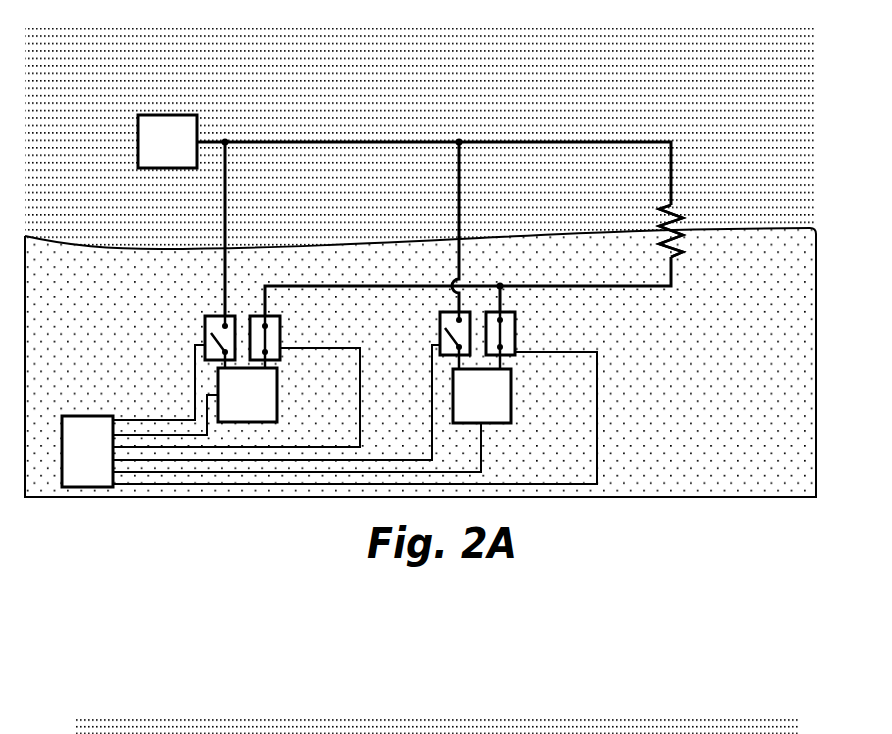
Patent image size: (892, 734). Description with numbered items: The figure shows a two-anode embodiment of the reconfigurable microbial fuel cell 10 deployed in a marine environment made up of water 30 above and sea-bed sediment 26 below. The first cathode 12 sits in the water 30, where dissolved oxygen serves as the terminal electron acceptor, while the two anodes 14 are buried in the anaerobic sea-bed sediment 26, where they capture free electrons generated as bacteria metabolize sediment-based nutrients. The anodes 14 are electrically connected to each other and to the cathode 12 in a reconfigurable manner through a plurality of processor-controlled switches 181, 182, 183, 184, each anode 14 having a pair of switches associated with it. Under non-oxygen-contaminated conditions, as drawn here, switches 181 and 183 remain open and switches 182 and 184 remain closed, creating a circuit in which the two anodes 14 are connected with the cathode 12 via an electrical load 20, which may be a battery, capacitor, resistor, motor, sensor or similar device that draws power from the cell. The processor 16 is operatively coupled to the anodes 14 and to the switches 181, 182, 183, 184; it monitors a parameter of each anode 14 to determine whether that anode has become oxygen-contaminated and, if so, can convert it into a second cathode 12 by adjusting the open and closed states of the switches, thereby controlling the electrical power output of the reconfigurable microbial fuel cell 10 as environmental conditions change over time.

The reconfigurable microbial fuel cell 10 is at (731, 97).
The first cathode 12 is at (138, 149).
The anodes 14 is at (277, 400).
The processor 16 is at (83, 416).
The processor-controlled switch 181 is at (230, 316).
The processor-controlled switch 182 is at (254, 316).
The processor-controlled switch 183 is at (440, 323).
The processor-controlled switch 184 is at (515, 332).
The electrical load 20 is at (680, 218).
The sea-bed sediment 26 is at (767, 317).
The water 30 is at (506, 99).